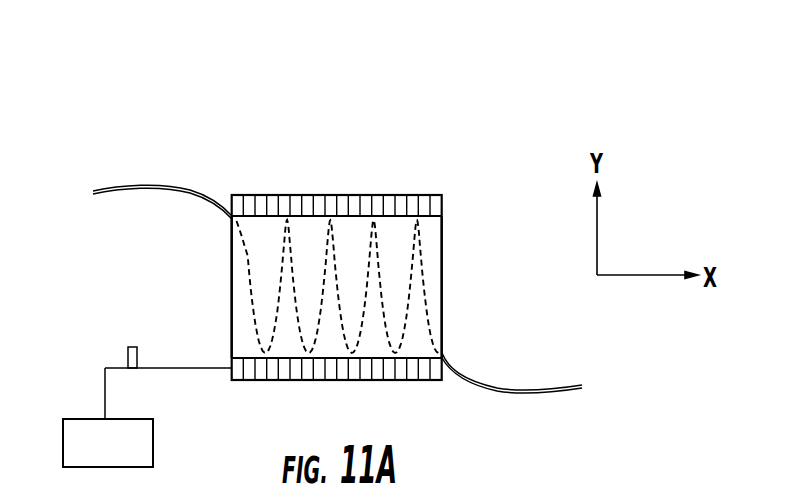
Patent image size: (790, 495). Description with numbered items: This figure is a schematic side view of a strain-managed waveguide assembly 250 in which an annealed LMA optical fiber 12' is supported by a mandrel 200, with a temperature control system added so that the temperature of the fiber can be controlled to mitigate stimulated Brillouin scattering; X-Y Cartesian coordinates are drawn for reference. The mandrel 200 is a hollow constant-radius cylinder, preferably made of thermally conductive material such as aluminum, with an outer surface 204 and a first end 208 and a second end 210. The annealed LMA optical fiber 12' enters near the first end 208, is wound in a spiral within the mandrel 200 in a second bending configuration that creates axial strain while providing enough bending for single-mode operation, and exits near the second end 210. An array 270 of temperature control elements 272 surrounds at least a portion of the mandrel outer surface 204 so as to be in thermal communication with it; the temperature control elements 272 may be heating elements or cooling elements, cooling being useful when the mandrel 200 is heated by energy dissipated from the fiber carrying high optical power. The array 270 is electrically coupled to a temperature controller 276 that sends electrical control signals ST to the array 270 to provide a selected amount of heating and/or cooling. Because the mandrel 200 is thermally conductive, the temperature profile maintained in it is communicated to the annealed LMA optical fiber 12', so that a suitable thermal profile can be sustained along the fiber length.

The strain-managed waveguide assembly 250 is at (136, 76).
The annealed LMA optical fiber 12' is at (162, 163).
The array of temperature control elements 270 is at (290, 188).
The temperature control elements 272 is at (352, 195).
The outer surface 204 is at (417, 195).
The mandrel 200 is at (455, 234).
The first end 208 is at (232, 320).
The second end 210 is at (442, 322).
The temperature controller 276 is at (127, 457).
The electrical control signals ST is at (128, 352).